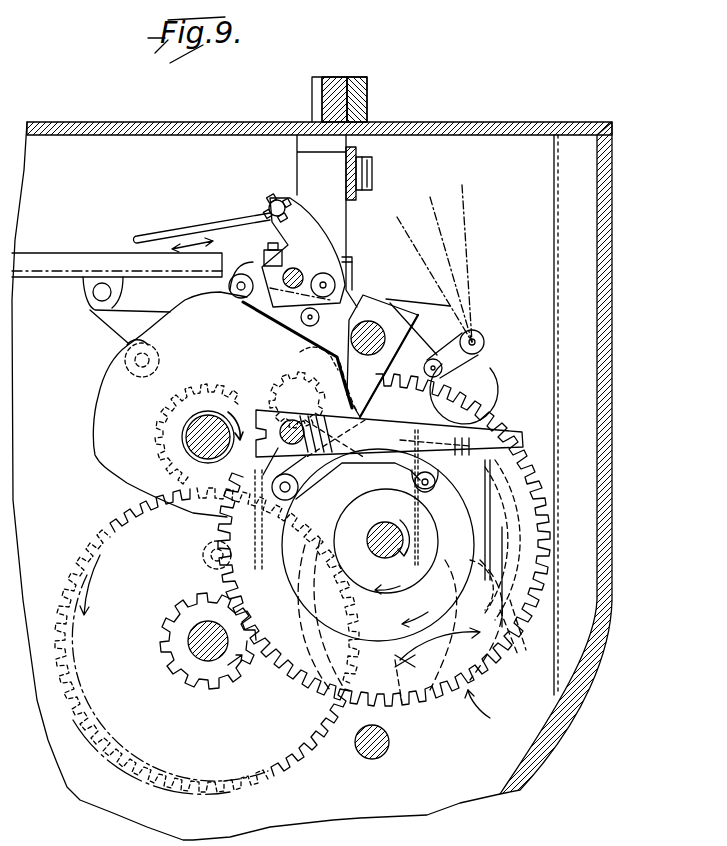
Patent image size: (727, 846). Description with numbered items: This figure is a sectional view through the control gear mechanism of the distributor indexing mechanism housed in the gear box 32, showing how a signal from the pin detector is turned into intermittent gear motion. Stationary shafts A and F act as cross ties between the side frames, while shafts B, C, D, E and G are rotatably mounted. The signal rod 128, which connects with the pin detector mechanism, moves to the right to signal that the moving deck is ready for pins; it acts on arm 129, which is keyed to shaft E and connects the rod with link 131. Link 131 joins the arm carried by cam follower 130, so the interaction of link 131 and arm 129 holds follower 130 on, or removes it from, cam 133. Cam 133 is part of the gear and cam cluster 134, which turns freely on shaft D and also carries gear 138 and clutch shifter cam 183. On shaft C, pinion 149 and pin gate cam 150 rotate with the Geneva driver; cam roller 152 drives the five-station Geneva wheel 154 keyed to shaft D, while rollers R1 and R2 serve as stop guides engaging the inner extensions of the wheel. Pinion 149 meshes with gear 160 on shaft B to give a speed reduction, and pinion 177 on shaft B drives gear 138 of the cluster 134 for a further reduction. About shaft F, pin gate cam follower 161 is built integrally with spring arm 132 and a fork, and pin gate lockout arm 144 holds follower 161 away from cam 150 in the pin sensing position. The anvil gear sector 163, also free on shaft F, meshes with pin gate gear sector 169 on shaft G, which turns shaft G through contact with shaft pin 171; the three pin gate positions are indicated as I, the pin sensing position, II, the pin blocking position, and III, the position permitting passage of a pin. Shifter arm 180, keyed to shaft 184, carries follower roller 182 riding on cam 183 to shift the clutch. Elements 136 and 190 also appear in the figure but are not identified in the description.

The gear box 32 is at (617, 338).
The signal rod 128 is at (158, 232).
The arm 129 is at (298, 228).
The cam follower 130 is at (372, 410).
The link 131 is at (262, 322).
The spring arm 132 is at (442, 372).
The cam 133 is at (489, 524).
The gear and cam cluster 134 is at (494, 712).
The large gear 136 is at (300, 688).
The gear 138 is at (555, 584).
The pin gate lockout arm 144 is at (312, 352).
The pinion 149 is at (170, 440).
The pin gate cam 150 is at (94, 404).
The cam roller 152 is at (283, 372).
The Geneva wheel 154 is at (403, 704).
The gear 160 is at (126, 511).
The pin gate cam follower 161 is at (255, 268).
The anvil gear sector 163 is at (410, 318).
The pin gate gear sector 169 is at (447, 318).
The shaft pin 171 is at (490, 355).
The pinion 177 is at (175, 668).
The shifter arm 180 is at (435, 425).
The follower roller 182 is at (400, 525).
The clutch shifter cam 183 is at (490, 547).
The shaft 184 is at (277, 460).
The link 190 is at (357, 486).
The shaft A is at (370, 755).
The shaft B is at (207, 682).
The shaft C is at (207, 425).
The shaft D is at (373, 556).
The shaft E is at (300, 275).
The shaft F is at (354, 274).
The shaft G is at (478, 343).
The pin sensing position I is at (431, 274).
The pin blocking position II is at (446, 262).
The pin passing position III is at (463, 256).
The roller R1 is at (200, 553).
The roller R2 is at (126, 350).